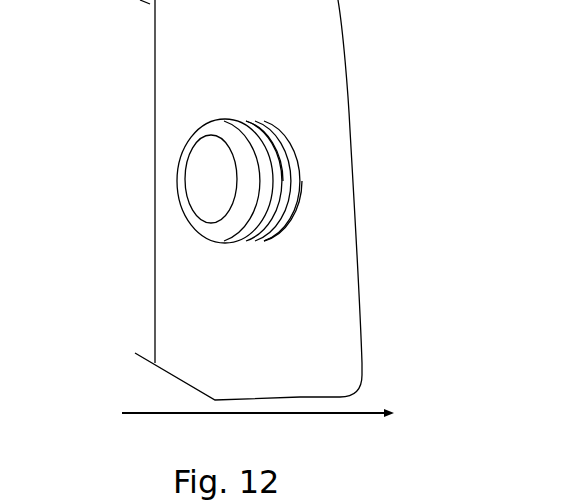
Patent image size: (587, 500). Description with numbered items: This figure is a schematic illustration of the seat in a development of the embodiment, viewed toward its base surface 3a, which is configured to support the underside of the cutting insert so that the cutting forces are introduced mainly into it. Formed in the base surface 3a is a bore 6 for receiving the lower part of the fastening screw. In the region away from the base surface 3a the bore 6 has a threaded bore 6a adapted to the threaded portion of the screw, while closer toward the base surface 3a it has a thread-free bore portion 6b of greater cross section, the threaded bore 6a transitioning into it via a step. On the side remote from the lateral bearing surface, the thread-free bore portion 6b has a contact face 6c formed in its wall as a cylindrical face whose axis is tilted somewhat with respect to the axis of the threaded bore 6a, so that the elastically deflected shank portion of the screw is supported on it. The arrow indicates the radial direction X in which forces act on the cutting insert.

The base surface 3a is at (335, 106).
The bore 6 is at (208, 200).
The threaded bore 6a is at (245, 157).
The thread-free bore portion 6b is at (271, 136).
The contact face 6c is at (293, 183).
The radial direction X is at (343, 413).